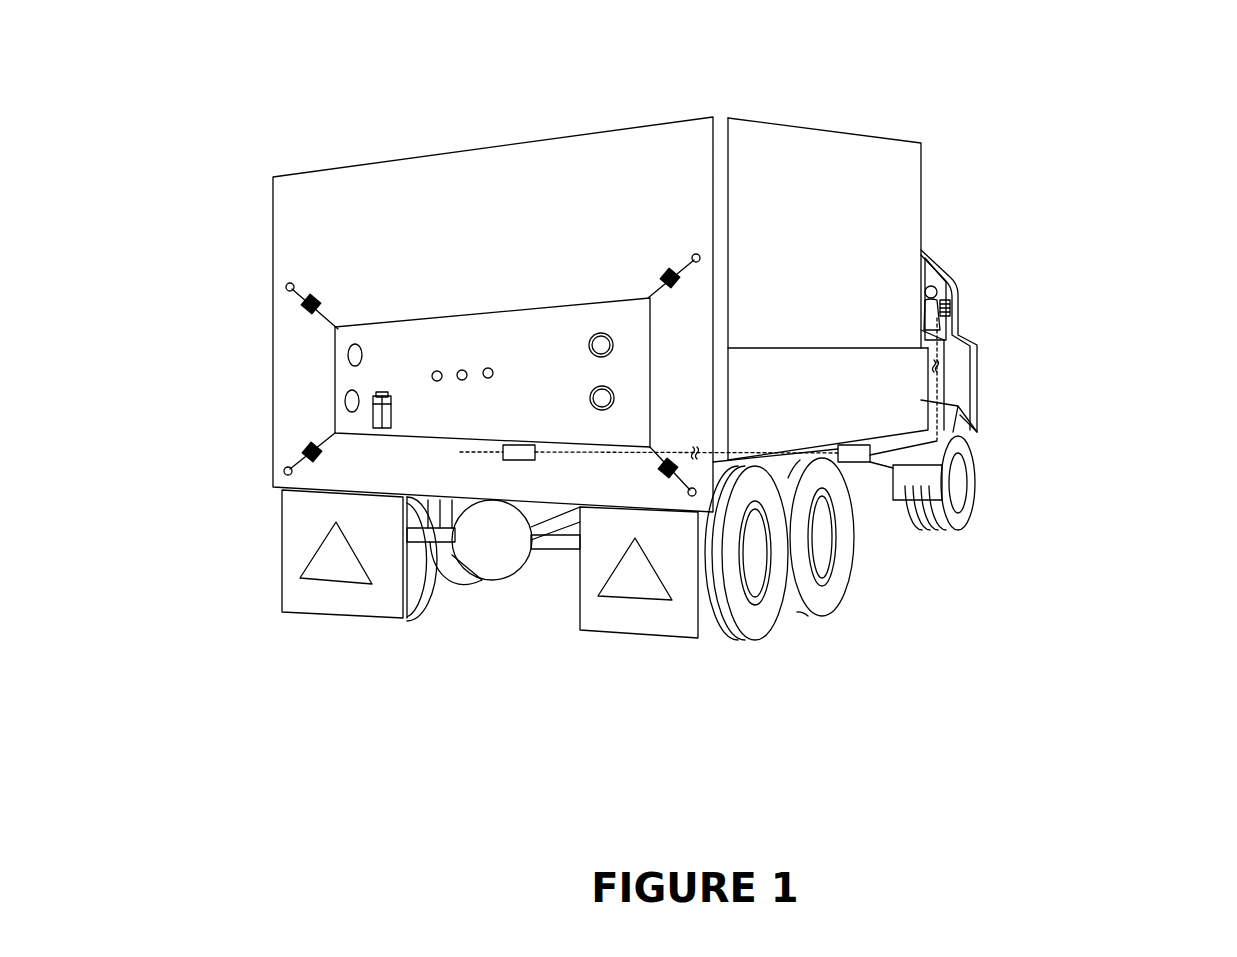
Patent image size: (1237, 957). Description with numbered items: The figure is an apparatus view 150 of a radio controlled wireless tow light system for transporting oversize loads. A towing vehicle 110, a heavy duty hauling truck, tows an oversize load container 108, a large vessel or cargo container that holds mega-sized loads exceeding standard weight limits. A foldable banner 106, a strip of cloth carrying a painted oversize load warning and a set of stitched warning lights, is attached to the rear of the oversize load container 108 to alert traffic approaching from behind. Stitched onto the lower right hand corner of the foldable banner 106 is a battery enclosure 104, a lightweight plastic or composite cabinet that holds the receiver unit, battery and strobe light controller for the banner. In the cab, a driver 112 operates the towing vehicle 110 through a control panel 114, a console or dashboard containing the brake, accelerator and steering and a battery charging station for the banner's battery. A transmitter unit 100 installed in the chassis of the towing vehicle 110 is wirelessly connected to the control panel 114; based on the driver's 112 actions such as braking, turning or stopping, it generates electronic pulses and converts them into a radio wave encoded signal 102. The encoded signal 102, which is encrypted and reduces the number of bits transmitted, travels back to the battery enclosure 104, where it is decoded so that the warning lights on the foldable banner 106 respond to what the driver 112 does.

The transmitter unit 100 is at (862, 468).
The encoded signal 102 is at (516, 462).
The battery enclosure 104 is at (375, 415).
The foldable banner 106 is at (337, 371).
The oversize load container 108 is at (826, 133).
The towing vehicle 110 is at (975, 403).
The driver 112 is at (940, 280).
The control panel 114 is at (950, 312).
The apparatus view 150 is at (1103, 727).